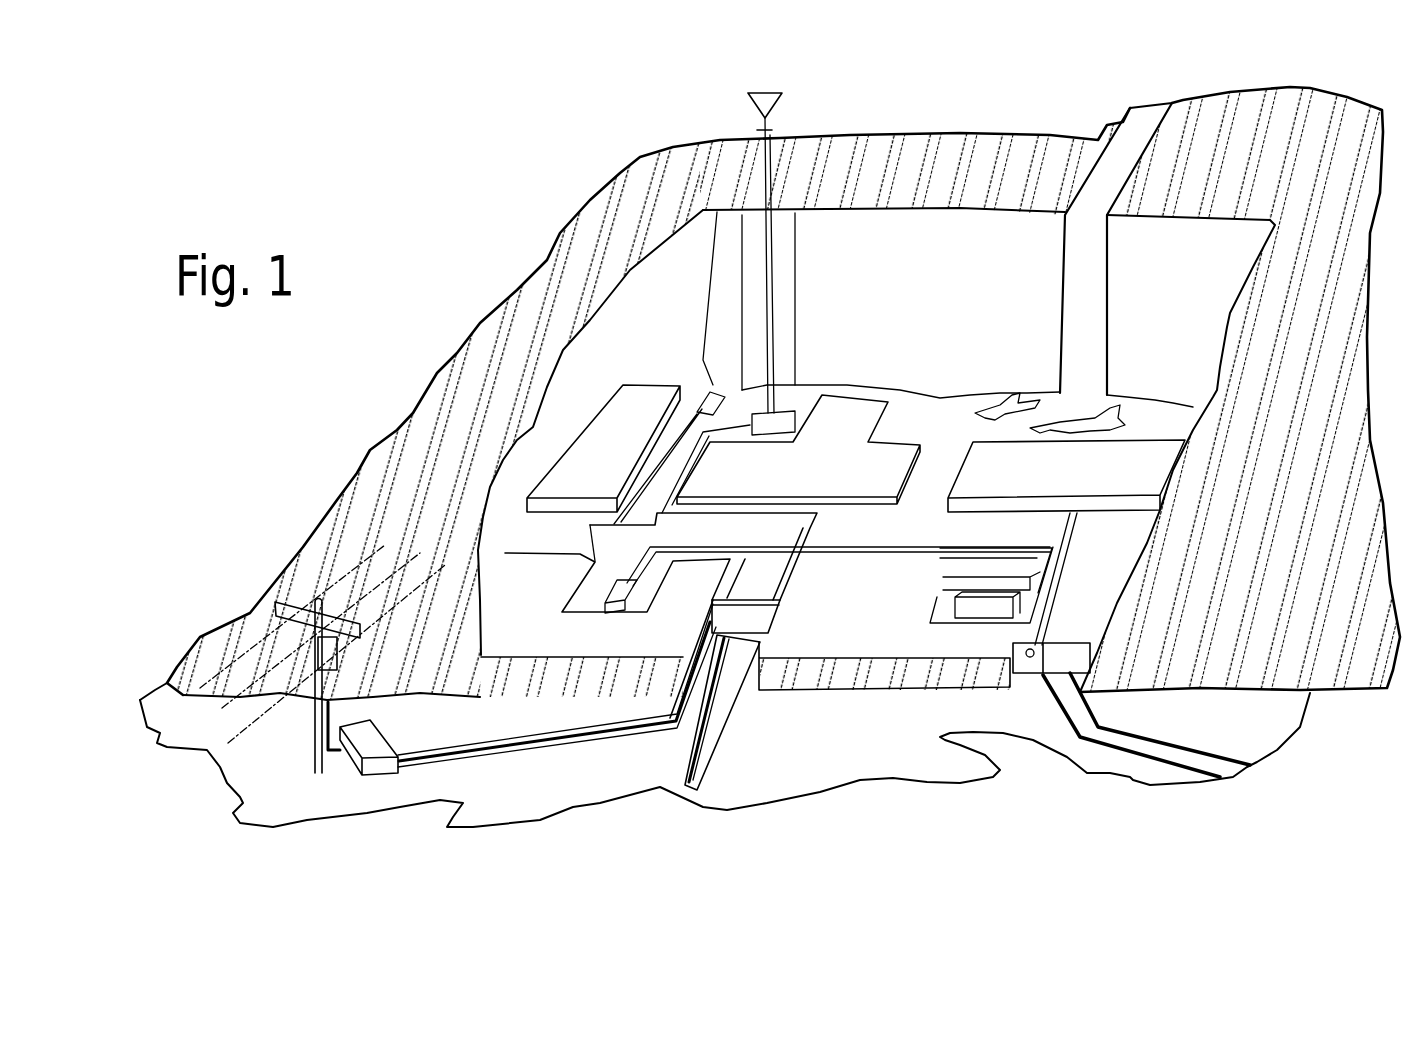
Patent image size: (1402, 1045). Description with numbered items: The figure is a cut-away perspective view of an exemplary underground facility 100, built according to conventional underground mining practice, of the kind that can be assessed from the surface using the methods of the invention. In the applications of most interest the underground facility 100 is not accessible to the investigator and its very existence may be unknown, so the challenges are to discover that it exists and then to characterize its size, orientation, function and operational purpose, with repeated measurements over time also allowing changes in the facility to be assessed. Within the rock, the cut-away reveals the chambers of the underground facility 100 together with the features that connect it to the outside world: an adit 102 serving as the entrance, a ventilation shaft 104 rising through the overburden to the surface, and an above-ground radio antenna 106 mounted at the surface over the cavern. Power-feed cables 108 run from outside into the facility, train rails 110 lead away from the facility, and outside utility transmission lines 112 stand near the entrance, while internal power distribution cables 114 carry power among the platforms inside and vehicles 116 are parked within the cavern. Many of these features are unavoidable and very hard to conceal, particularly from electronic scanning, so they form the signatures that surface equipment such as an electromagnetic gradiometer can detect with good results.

The underground facility 100 is at (520, 145).
The adit 102 is at (727, 657).
The ventilation shaft 104 is at (1146, 113).
The above-ground radio antenna 106 is at (780, 118).
The power-feed cables 108 is at (592, 742).
The train rails 110 is at (1152, 753).
The outside utility transmission lines 112 is at (266, 602).
The internal power distribution cables 114 is at (643, 548).
The vehicles 116 is at (988, 418).